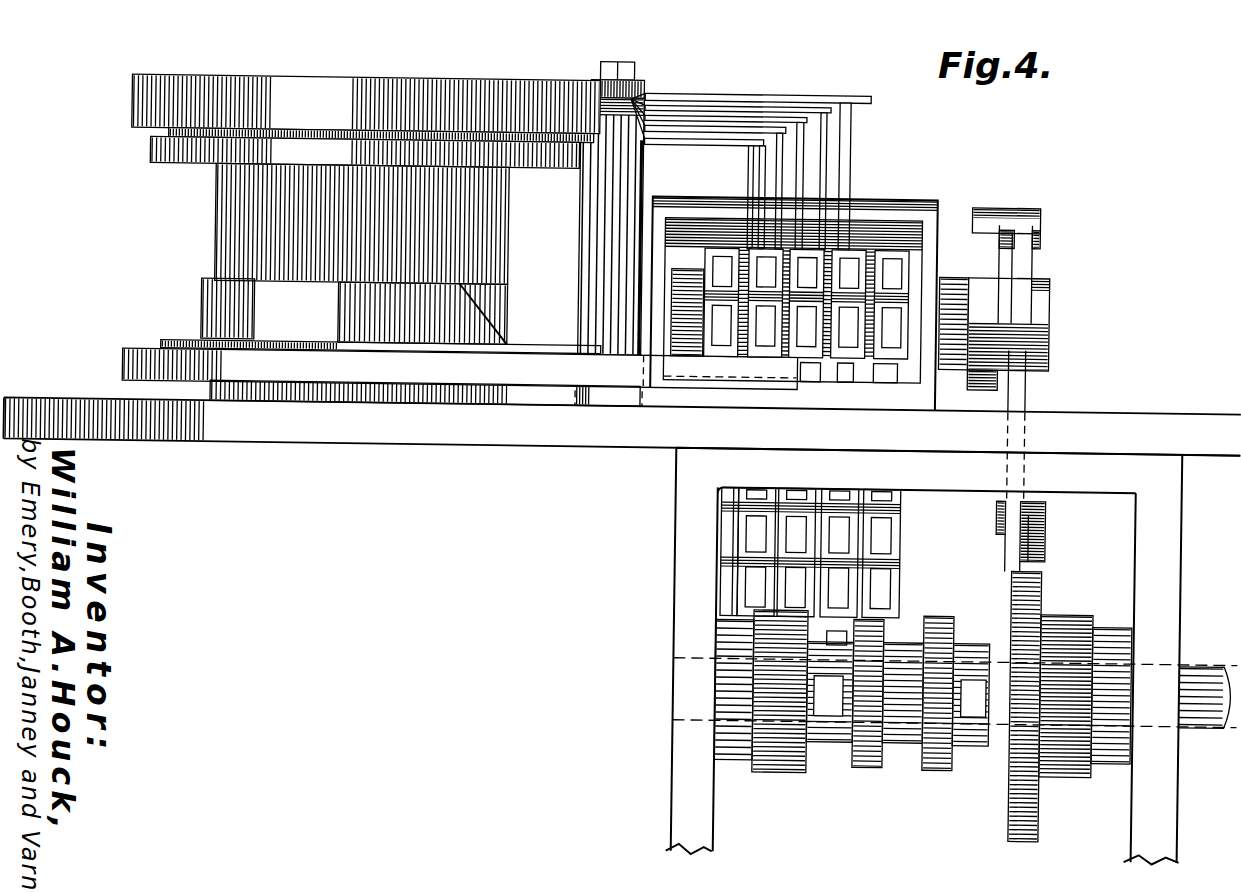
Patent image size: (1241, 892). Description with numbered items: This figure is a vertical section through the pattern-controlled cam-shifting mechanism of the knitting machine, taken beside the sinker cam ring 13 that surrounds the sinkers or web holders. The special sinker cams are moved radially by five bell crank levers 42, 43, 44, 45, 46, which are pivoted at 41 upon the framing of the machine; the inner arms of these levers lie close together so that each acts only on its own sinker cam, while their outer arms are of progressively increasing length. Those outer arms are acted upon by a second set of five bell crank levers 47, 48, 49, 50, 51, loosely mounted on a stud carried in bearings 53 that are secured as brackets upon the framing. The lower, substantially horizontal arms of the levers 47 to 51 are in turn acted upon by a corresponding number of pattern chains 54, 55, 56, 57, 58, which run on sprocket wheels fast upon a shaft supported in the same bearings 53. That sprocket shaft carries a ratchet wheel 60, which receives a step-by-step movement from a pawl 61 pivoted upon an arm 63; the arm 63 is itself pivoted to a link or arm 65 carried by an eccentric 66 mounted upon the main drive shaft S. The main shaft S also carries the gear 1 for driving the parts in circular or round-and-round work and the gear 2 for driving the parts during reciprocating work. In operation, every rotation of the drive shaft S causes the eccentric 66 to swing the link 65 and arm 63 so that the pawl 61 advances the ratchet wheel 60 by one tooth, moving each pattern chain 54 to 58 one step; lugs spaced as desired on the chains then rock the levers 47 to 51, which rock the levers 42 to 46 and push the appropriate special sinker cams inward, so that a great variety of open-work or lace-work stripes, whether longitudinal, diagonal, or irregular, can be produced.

The gear 1 is at (1092, 613).
The gear 2 is at (780, 771).
The main shaft S is at (1202, 662).
The sinker cam ring 13 is at (240, 91).
The pivot 41 is at (620, 50).
The bell crank lever 42 is at (733, 141).
The bell crank lever 43 is at (708, 127).
The bell crank lever 44 is at (675, 117).
The bell crank lever 45 is at (750, 106).
The bell crank lever 46 is at (713, 97).
The bell crank lever 47 is at (750, 176).
The bell crank lever 48 is at (768, 188).
The bell crank lever 49 is at (797, 154).
The bell crank lever 50 is at (813, 165).
The bell crank lever 51 is at (840, 179).
The bearings 53 is at (880, 386).
The pattern chain 54 is at (728, 522).
The pattern chain 55 is at (748, 538).
The pattern chain 56 is at (813, 529).
The pattern chain 57 is at (855, 540).
The pattern chain 58 is at (870, 576).
The ratchet wheel 60 is at (983, 309).
The pawl 61 is at (983, 253).
The arm 63 is at (1015, 385).
The link or arm 65 is at (1030, 561).
The eccentric 66 is at (1033, 587).